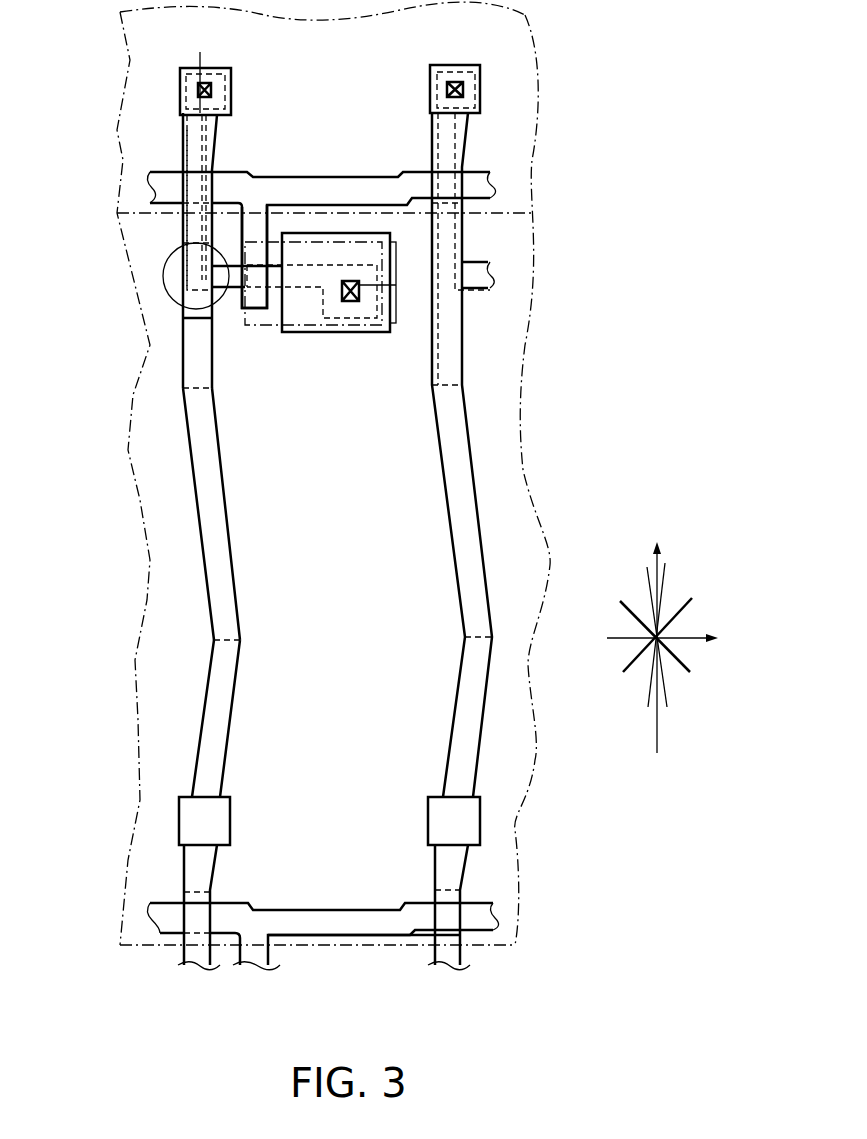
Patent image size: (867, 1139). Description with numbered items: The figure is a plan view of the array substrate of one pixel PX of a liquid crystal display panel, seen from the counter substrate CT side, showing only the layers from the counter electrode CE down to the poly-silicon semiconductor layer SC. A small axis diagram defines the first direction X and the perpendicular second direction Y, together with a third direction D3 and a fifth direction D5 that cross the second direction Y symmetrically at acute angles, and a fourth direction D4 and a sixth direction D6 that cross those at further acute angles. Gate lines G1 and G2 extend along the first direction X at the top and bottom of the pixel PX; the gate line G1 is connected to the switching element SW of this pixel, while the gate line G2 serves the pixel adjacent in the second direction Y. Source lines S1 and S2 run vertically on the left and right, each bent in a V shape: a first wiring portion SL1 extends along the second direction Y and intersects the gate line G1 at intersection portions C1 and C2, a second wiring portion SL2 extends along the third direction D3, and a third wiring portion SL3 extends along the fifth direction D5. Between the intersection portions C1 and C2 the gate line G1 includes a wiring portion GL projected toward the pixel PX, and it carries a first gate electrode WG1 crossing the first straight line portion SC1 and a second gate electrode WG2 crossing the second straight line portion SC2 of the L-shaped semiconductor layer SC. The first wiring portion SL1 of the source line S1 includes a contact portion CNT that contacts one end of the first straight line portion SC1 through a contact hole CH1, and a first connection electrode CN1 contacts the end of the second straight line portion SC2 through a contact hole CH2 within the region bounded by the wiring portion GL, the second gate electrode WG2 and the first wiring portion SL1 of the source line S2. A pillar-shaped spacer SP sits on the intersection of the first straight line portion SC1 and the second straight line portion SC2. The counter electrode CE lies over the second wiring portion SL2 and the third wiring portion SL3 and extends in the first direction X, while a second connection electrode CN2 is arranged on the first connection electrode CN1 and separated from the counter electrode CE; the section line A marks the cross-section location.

The counter electrode CE is at (555, 108).
The wiring portion GL is at (282, 552).
The gate line G1 is at (150, 190).
The gate line G2 is at (152, 910).
The source line S1 is at (317, 568).
The source line S2 is at (452, 968).
The first wiring portion SL1 is at (183, 362).
The second wiring portion SL2 is at (196, 502).
The third wiring portion SL3 is at (200, 718).
The contact portion CNT is at (180, 82).
The contact hole CH1 is at (212, 87).
The contact hole CH2 is at (350, 302).
The counter substrate CT is at (179, 832).
The pixel PX is at (416, 330).
The first connection electrode CN1 is at (393, 232).
The second connection electrode CN2 is at (397, 262).
The switching element SW is at (178, 230).
The first gate electrode WG1 is at (198, 185).
The second gate electrode WG2 is at (254, 278).
The poly-silicon semiconductor layer SC is at (178, 137).
The first straight line portion SC1 is at (183, 243).
The second straight line portion SC2 is at (183, 318).
The pillar-shaped spacer SP is at (164, 276).
The intersection portion C1 is at (174, 158).
The intersection portion C2 is at (470, 155).
The section line A- A is at (303, 164).
The first direction X is at (670, 641).
The second direction Y is at (655, 634).
The third direction D3 is at (647, 568).
The fourth direction D4 is at (630, 612).
The fifth direction D5 is at (666, 573).
The sixth direction D6 is at (690, 608).